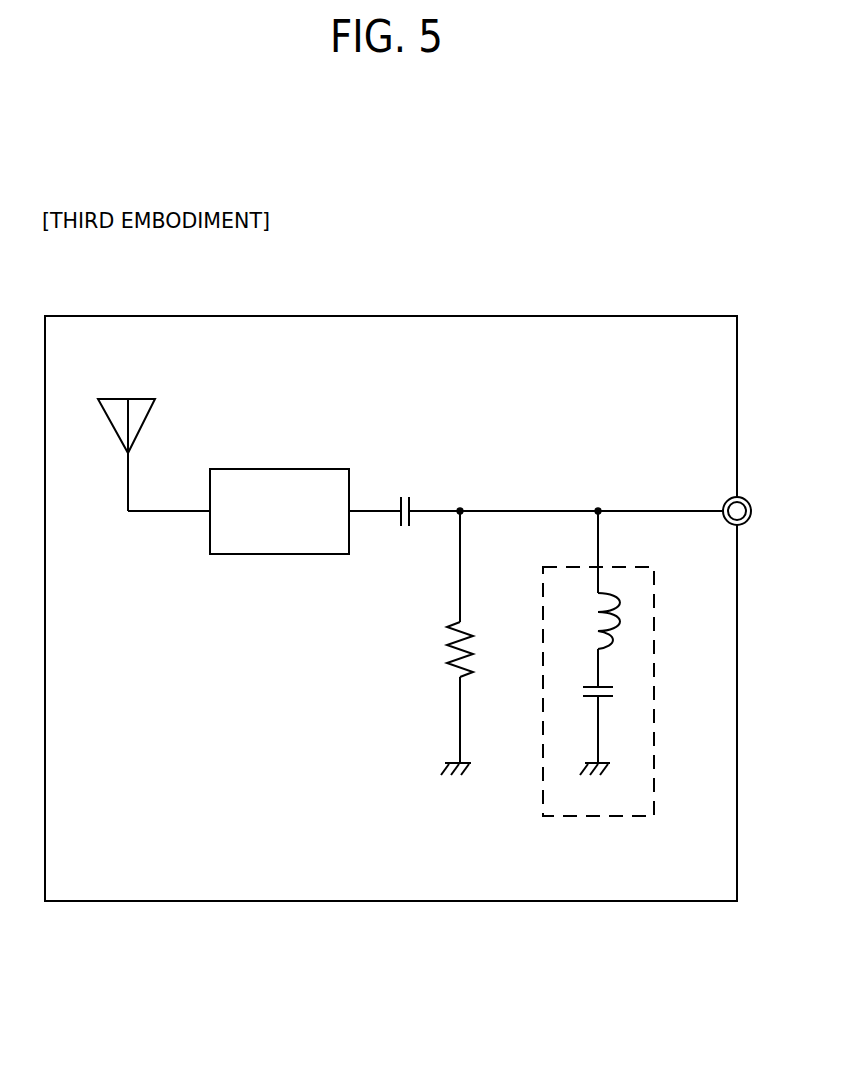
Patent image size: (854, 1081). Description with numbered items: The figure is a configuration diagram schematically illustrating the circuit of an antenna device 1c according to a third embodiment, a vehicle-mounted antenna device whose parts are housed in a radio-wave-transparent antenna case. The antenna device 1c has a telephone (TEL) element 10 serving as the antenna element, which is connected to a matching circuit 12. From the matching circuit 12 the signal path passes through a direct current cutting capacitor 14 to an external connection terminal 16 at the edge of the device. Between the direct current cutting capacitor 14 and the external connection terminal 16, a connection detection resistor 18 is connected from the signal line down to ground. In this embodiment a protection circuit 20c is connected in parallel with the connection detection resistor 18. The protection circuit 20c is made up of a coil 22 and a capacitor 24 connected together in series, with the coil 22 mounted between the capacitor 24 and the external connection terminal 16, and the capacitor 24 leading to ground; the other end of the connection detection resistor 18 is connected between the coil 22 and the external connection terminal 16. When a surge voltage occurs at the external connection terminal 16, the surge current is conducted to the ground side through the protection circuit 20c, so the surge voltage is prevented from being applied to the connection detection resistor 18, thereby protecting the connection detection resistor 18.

The antenna device 1c is at (489, 314).
The telephone (TEL) element 10 is at (113, 398).
The matching circuit 12 is at (293, 467).
The direct current cutting capacitor 14 is at (410, 498).
The external connection terminal 16 is at (727, 499).
The connection detection resistor 18 is at (453, 648).
The protection circuit 20c is at (656, 596).
The coil 22 is at (604, 613).
The capacitor 24 is at (595, 696).